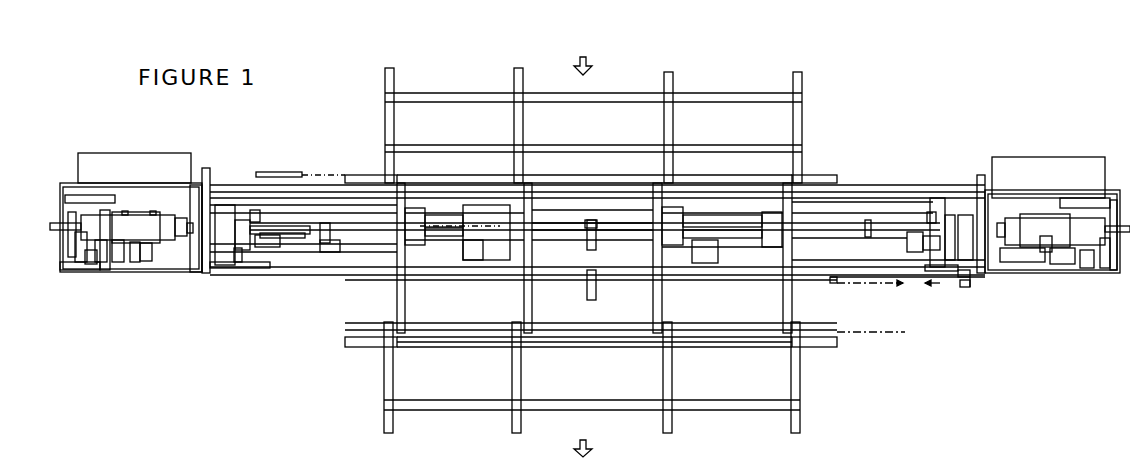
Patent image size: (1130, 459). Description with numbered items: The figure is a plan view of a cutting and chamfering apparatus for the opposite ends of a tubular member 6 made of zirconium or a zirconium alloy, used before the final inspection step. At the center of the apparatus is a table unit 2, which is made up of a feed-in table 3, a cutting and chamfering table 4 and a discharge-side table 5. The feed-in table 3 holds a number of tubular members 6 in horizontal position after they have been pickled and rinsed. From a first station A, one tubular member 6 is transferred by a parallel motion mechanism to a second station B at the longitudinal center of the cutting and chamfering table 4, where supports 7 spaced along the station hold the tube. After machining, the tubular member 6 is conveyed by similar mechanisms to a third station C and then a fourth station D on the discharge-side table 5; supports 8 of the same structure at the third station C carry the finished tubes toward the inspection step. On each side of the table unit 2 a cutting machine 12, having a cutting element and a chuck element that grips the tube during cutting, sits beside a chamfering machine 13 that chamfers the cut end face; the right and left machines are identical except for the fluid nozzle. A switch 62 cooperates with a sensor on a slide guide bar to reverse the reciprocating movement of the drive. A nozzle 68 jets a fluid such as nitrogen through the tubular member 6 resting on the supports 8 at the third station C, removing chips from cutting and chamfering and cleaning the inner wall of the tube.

The table unit 2 is at (810, 118).
The feed-in table 3 is at (720, 93).
The cutting and chamfering table 4 is at (657, 256).
The discharge-side table 5 is at (672, 367).
The tubular member 6 is at (292, 172).
The supports 7 is at (586, 233).
The supports 8 is at (597, 290).
The cutting machine 12 is at (238, 258).
The chamfering machine 13 is at (152, 256).
The switch 62 is at (152, 211).
The nozzle 68 is at (968, 288).
The first station A is at (325, 175).
The second station B is at (463, 212).
The third station C is at (866, 283).
The fourth station D is at (887, 333).